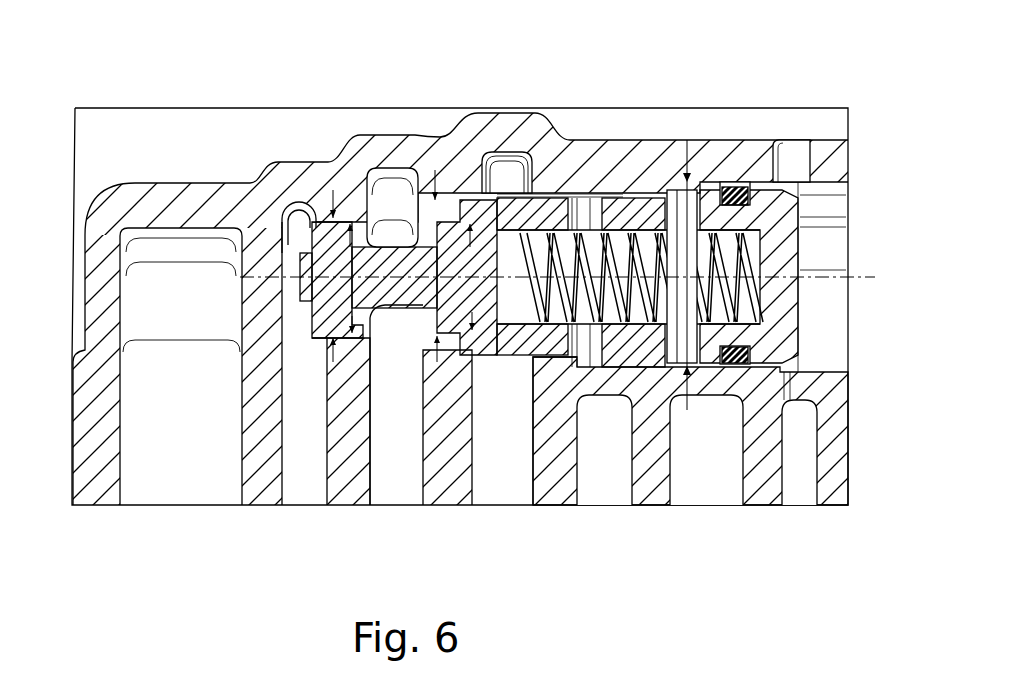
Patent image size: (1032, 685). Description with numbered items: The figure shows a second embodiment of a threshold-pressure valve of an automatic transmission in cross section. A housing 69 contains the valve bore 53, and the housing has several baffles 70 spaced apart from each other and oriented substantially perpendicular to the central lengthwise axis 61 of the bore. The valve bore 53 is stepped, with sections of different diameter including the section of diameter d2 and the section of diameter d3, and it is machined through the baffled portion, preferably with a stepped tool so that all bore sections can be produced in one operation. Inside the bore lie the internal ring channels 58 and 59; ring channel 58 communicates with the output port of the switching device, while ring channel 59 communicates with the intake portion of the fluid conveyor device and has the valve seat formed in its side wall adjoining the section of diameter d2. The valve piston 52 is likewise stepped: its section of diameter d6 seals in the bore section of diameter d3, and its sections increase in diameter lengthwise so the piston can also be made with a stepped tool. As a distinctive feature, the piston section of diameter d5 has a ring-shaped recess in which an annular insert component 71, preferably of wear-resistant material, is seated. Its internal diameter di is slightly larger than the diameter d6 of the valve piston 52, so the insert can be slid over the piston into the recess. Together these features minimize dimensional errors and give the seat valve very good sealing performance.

The valve piston 52 is at (557, 345).
The valve bore 53 is at (445, 182).
The ring channel 58 is at (307, 510).
The ring channel 59 is at (390, 195).
The lengthwise central axis 61 is at (873, 280).
The housing 69 is at (603, 163).
The baffles 70 is at (265, 458).
The insert component 71 is at (486, 195).
The diameter d2 is at (435, 170).
The diameter d3 is at (708, 530).
The diameter d5 is at (555, 170).
The diameter d6 is at (378, 310).
The internal diameter of the insert component di is at (483, 312).